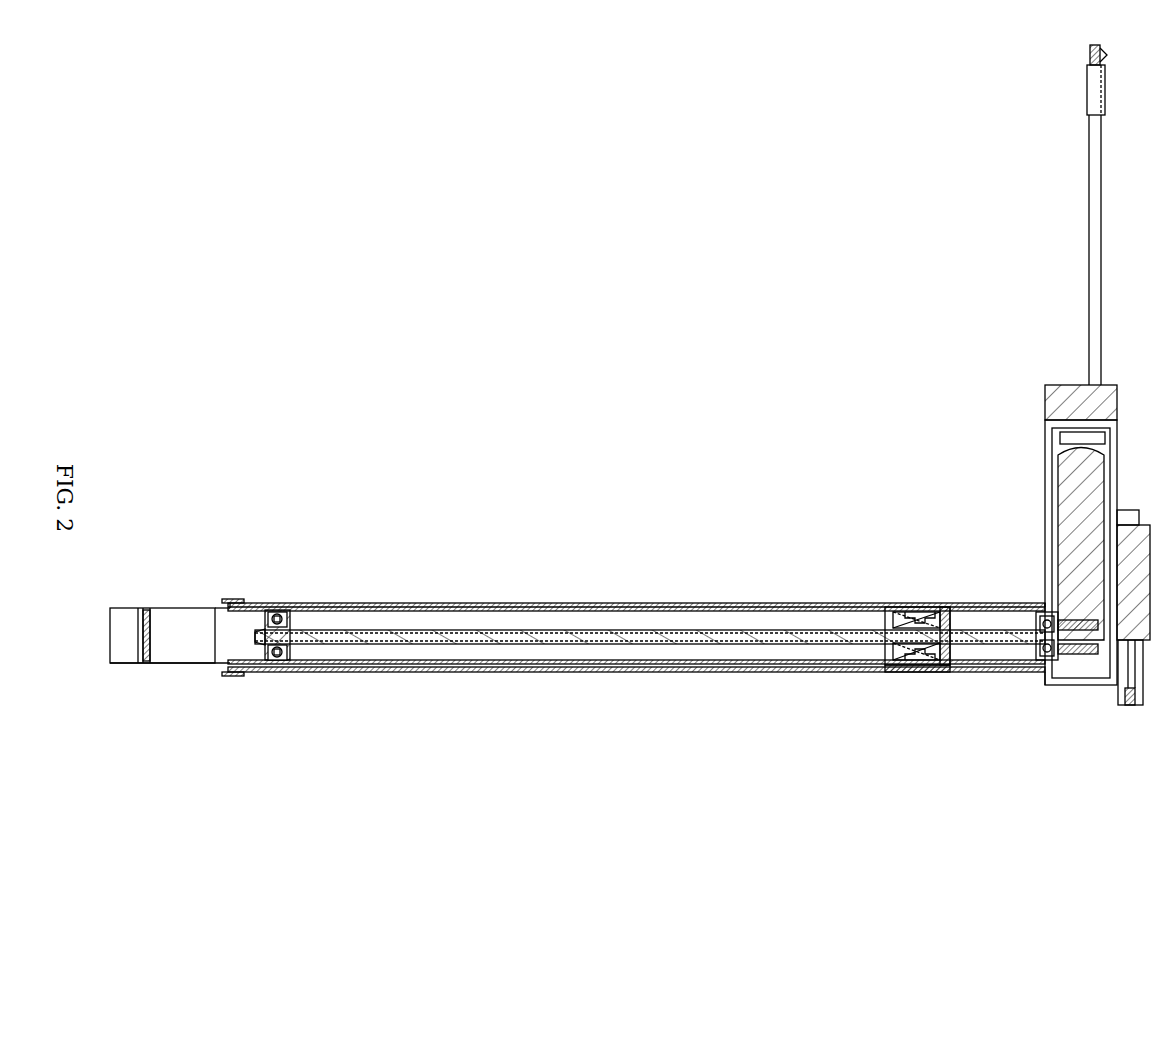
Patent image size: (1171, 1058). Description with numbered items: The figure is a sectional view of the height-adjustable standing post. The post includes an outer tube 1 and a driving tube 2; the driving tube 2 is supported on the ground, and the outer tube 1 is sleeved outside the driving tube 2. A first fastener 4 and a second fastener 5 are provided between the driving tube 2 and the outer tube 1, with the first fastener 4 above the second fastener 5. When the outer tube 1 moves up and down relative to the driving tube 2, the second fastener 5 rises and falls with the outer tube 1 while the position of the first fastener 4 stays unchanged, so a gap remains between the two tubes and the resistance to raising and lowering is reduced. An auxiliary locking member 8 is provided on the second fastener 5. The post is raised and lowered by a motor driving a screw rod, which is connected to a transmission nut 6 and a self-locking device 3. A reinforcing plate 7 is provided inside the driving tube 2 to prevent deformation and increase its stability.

The outer tube 1 is at (968, 672).
The driving tube 2 is at (182, 663).
The self-locking device 3 is at (297, 604).
The first fastener 4 is at (915, 672).
The second fastener 5 is at (247, 672).
The transmission nut 6 is at (961, 601).
The reinforcing plate 7 is at (148, 663).
The auxiliary locking member 8 is at (212, 672).